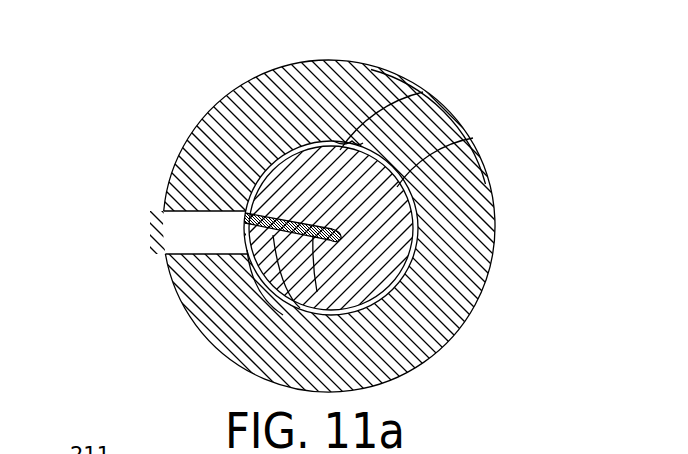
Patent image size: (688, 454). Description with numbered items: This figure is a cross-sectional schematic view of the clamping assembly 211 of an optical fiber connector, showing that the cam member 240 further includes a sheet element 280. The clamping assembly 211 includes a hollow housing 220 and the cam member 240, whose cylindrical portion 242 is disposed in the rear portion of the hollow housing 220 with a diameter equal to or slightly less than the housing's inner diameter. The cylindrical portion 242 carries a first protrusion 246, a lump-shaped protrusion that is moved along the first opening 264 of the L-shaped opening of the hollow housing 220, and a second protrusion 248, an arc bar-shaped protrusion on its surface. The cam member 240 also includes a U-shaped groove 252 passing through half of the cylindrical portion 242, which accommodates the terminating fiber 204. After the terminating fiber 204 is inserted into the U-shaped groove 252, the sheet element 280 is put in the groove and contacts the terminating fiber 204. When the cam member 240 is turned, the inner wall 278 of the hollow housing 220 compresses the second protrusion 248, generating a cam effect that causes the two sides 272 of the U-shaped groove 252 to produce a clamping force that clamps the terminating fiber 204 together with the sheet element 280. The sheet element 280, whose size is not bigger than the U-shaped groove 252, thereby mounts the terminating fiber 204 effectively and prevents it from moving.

The clamping assembly 211 is at (124, 70).
The terminating fiber 204 is at (473, 138).
The hollow housing 220 is at (407, 80).
The cam member 240 is at (407, 194).
The cylindrical portion 242 is at (450, 351).
The first protrusion 246 is at (286, 147).
The second protrusion 248 is at (423, 92).
The U-shaped groove 252 is at (283, 213).
The first opening 264 is at (178, 232).
The two sides 272 is at (285, 305).
The inner wall 278 is at (307, 140).
The sheet element 280 is at (407, 313).